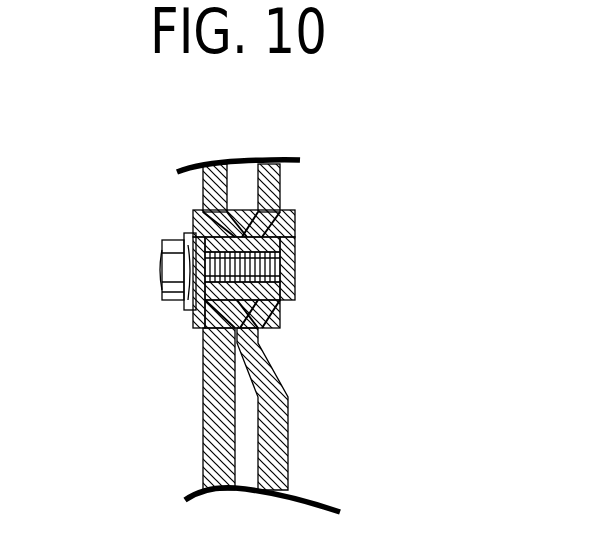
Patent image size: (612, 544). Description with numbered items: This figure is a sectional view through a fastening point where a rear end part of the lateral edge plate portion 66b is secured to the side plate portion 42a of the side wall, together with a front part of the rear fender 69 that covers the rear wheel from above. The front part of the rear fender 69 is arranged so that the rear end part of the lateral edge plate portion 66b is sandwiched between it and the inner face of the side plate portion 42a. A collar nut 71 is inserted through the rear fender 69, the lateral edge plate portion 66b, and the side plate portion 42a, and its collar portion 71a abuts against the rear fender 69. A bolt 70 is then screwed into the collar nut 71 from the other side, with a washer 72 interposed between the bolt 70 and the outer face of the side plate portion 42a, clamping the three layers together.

The rear fender 69 is at (280, 178).
The collar nut 71 is at (208, 206).
The collar portion 71a is at (295, 228).
The bolt 70 is at (160, 268).
The washer 72 is at (198, 328).
The side plate portion 42a is at (208, 427).
The lateral edge plate portion 66b is at (283, 430).